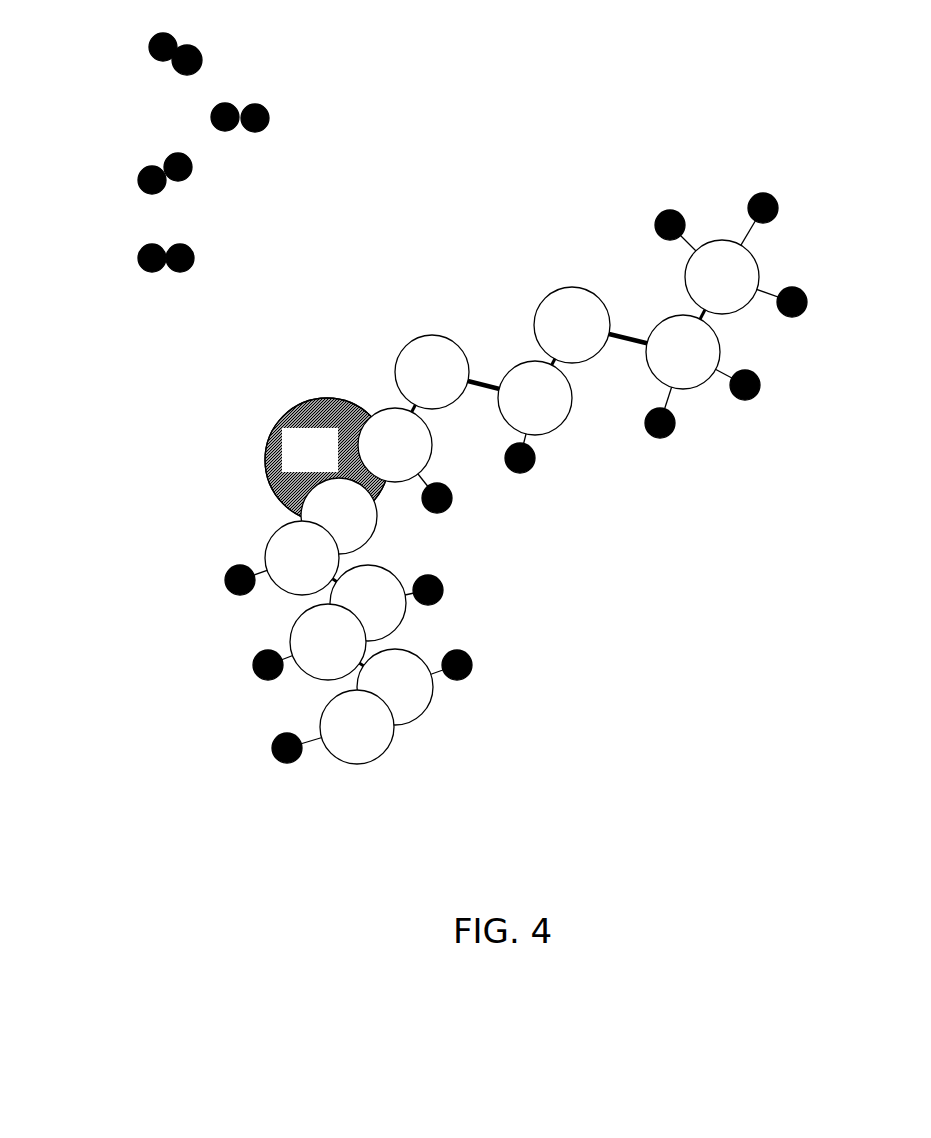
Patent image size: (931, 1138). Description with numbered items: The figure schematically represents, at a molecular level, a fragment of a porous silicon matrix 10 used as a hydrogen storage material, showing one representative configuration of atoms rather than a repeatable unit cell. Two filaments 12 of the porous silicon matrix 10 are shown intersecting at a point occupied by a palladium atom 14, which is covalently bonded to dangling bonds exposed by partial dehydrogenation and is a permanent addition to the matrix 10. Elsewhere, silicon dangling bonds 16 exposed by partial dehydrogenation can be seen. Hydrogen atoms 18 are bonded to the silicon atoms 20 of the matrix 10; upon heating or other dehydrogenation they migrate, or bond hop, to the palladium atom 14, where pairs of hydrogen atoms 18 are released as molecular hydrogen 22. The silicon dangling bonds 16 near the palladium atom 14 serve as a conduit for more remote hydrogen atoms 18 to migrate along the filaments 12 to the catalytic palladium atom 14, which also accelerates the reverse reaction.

The porous silicon matrix 10 is at (507, 188).
The filaments 12 is at (735, 467).
The palladium atom 14 is at (263, 452).
The silicon dangling bonds 16 is at (543, 293).
The hydrogen atoms 18 is at (227, 590).
The silicon atoms 20 is at (355, 537).
The molecular hydrogen 22 is at (213, 117).